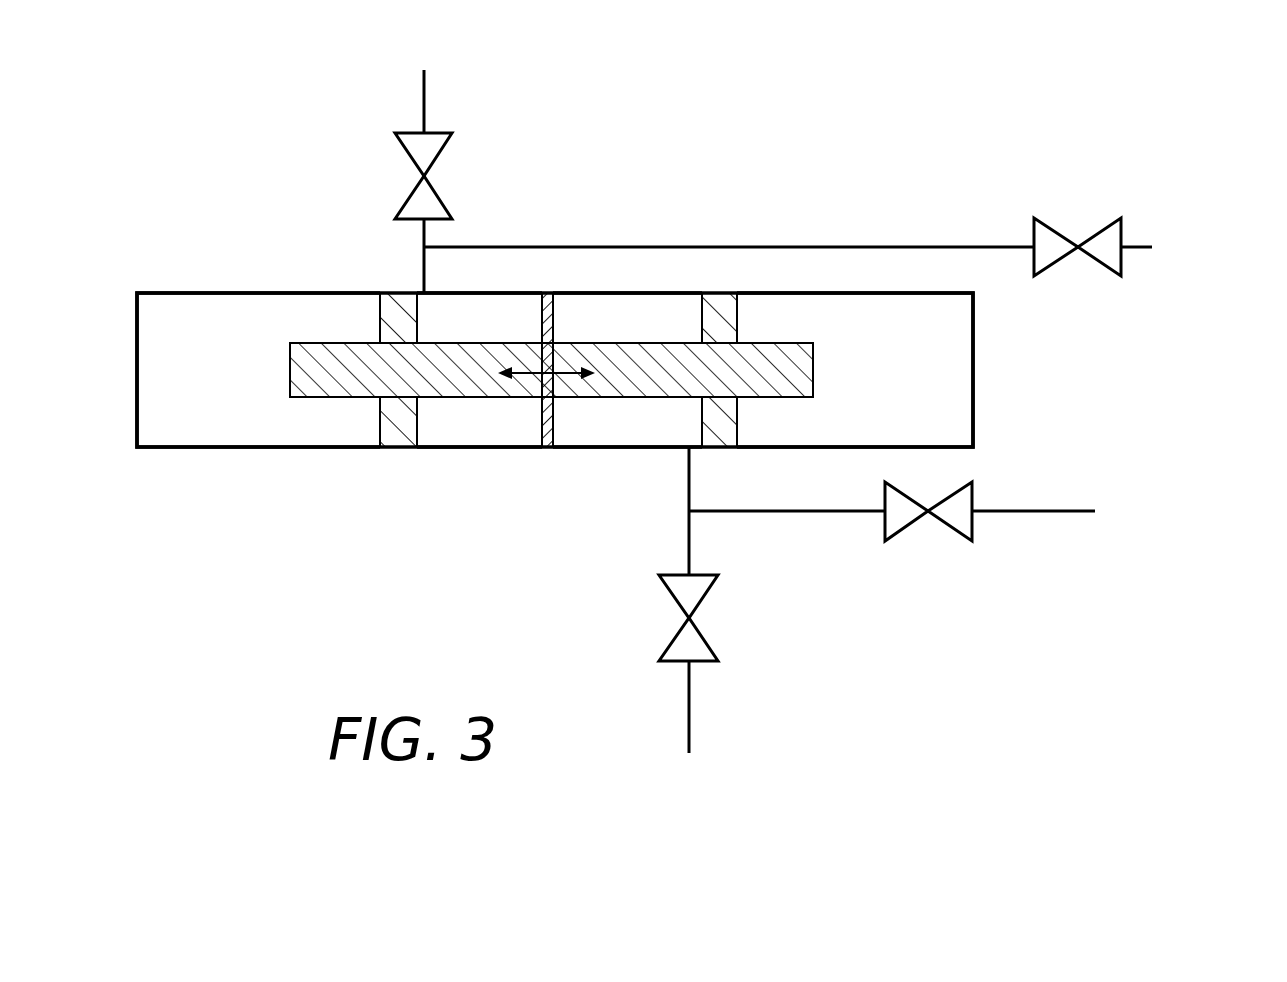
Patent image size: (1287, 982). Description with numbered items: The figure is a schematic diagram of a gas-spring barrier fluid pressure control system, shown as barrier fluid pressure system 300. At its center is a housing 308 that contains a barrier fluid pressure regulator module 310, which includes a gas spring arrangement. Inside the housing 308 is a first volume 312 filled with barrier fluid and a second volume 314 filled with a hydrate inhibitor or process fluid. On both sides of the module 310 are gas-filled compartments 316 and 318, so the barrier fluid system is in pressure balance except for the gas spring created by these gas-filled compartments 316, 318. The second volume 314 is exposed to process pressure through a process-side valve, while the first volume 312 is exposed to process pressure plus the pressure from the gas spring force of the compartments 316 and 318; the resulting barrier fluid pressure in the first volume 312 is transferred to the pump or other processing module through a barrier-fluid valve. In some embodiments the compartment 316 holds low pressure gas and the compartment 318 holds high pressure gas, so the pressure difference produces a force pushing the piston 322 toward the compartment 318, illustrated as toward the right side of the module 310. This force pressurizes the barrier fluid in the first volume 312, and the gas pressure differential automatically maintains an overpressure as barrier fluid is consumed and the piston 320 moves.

The barrier fluid pressure system 300 is at (891, 66).
The housing 308 is at (975, 355).
The barrier fluid pressure regulator module 310 is at (499, 500).
The first volume 312 is at (627, 370).
The second volume 314 is at (479, 370).
The gas-filled compartment 316 is at (855, 370).
The gas-filled compartment 318 is at (258, 370).
The piston 320 is at (556, 447).
The piston 322 is at (330, 385).